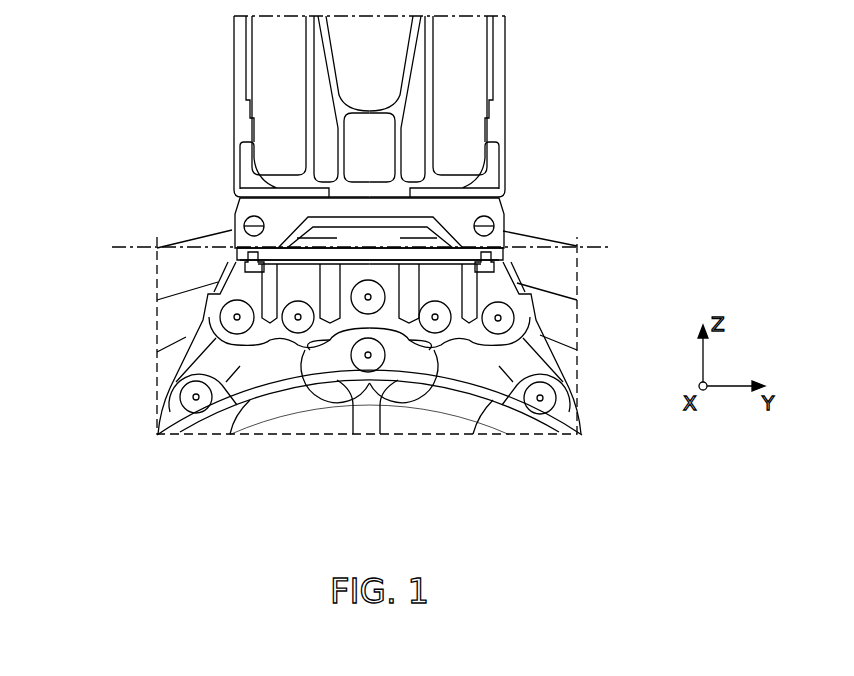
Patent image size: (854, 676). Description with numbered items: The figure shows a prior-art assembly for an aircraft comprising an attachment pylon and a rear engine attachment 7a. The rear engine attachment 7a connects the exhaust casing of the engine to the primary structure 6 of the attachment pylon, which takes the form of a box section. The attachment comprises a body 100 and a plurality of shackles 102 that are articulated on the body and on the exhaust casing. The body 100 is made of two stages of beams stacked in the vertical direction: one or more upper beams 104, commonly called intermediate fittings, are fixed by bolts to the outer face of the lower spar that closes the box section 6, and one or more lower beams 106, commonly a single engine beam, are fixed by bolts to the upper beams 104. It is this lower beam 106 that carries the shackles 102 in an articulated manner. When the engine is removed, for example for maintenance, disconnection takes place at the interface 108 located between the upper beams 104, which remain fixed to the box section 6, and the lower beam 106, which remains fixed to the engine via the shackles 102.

The primary structure 6 is at (232, 67).
The body 100 is at (272, 235).
The upper beams 104 is at (237, 215).
The lower beams 106 is at (213, 313).
The interface 108 is at (140, 248).
The rear engine attachment 7a is at (518, 270).
The shackles 102 is at (323, 348).